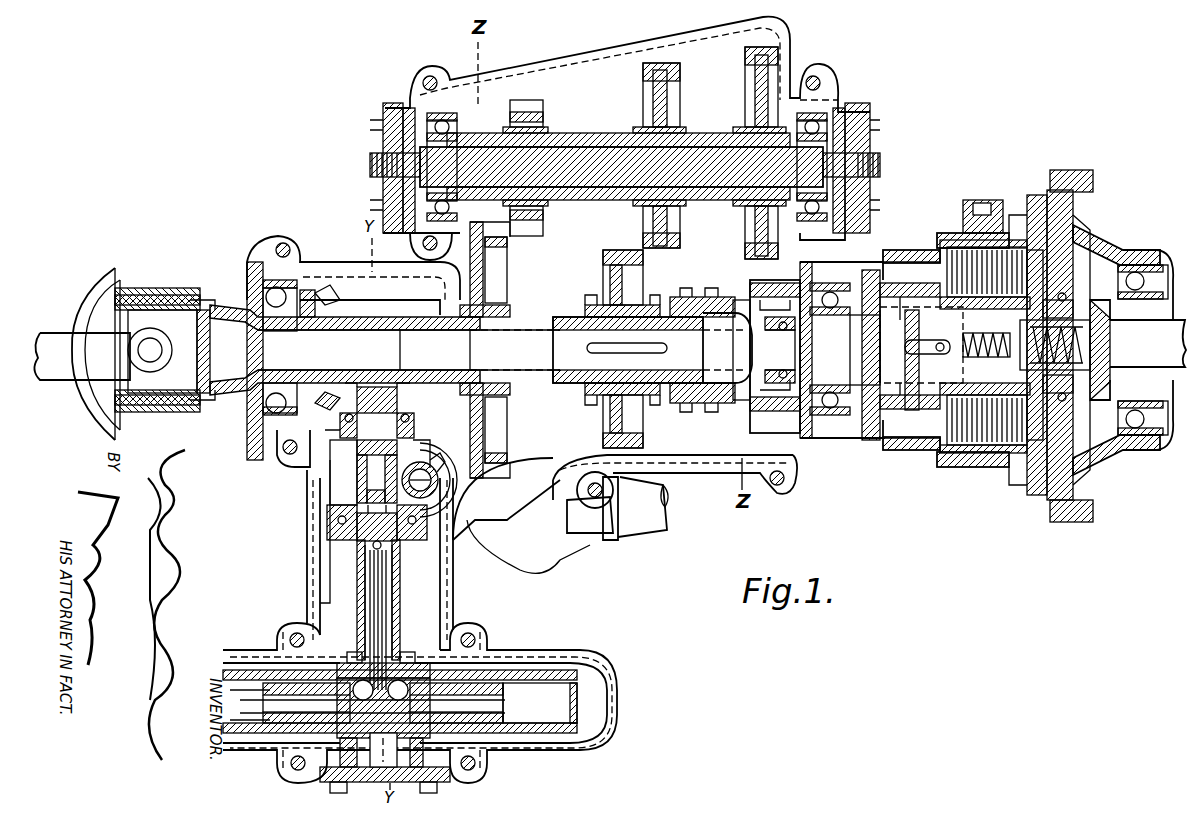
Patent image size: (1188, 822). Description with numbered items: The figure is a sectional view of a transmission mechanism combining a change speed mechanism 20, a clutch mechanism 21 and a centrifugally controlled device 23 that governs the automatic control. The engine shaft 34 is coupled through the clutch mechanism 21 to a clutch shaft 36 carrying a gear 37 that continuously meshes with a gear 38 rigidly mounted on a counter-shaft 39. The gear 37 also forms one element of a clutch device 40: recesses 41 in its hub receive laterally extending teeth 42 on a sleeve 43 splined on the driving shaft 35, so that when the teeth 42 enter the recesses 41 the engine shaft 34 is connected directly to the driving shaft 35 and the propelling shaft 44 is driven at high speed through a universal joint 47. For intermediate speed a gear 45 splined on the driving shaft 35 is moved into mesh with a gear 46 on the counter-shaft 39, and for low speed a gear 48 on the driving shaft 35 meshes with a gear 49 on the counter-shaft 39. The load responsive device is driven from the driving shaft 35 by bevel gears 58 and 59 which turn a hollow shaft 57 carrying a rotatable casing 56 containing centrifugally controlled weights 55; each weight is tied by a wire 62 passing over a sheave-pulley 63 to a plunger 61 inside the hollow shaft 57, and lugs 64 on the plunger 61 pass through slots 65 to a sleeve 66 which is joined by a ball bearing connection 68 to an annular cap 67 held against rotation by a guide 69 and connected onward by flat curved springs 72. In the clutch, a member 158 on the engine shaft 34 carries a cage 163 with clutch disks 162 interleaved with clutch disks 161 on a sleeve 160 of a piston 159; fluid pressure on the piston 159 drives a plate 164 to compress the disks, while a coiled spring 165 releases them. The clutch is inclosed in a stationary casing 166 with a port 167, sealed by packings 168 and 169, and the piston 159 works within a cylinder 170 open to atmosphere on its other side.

The change speed mechanism 20 is at (722, 75).
The clutch mechanism 21 is at (1028, 337).
The centrifugally controlled device 23 is at (420, 620).
The engine shaft 34 is at (1103, 345).
The driving shaft 35 is at (392, 310).
The clutch shaft 36 is at (841, 350).
The gear 37 is at (770, 415).
The gear 38 is at (752, 93).
The counter-shaft 39 is at (625, 166).
The clutch device 40 is at (735, 338).
The recesses 41 is at (752, 390).
The teeth 42 is at (714, 298).
The sleeve 43 is at (670, 395).
The propelling shaft 44 is at (82, 356).
The gear 45 is at (605, 425).
The gear 46 is at (645, 80).
The universal joint 47 is at (182, 348).
The gear 48 is at (503, 306).
The gear 49 is at (535, 118).
The centrifugally controlled weights 55 is at (498, 684).
The rotatable casing 56 is at (548, 730).
The hollow shaft 57 is at (398, 600).
The bevel gear 58 is at (325, 383).
The bevel gear 59 is at (403, 412).
The plunger 61 is at (356, 546).
The wires 62 is at (398, 622).
The sheave-pulley 63 is at (410, 680).
The lugs 64 is at (350, 505).
The slots 65 is at (398, 582).
The sleeve 66 is at (355, 548).
The annular cap 67 is at (327, 540).
The ball bearing connection 68 is at (418, 540).
The guide 69 is at (325, 587).
The flat curved springs 72 is at (429, 480).
The member 158 is at (1088, 270).
The piston 159 is at (958, 440).
The sleeve 160 is at (965, 367).
The clutch disks 161 is at (985, 447).
The clutch disks 162 is at (1000, 448).
The cage 163 is at (1020, 455).
The plate 164 is at (1095, 440).
The coiled spring 165 is at (925, 345).
The stationary casing 166 is at (890, 455).
The port 167 is at (962, 215).
The packing 168 is at (891, 346).
The packing 169 is at (1112, 435).
The cylinder 170 is at (915, 440).